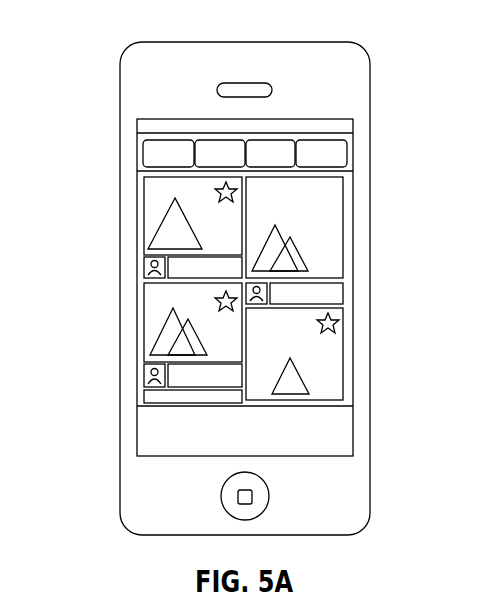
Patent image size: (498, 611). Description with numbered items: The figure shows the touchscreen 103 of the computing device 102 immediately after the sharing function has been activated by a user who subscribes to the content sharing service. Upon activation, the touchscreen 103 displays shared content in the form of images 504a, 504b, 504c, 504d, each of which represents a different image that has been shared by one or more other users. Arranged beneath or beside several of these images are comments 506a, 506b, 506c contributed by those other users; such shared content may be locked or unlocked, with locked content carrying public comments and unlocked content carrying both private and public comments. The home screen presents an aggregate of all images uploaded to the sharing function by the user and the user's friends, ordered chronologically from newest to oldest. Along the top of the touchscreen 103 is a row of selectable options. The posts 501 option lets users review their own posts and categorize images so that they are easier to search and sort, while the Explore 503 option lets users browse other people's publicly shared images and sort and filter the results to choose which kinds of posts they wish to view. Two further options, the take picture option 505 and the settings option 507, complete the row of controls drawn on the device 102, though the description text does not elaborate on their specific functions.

The computing device 102 is at (347, 42).
The touchscreen 103 is at (342, 430).
The posts 501 is at (143, 152).
The Explore 503 is at (215, 140).
The Take Pic tab 505 is at (273, 140).
The Settings tab 507 is at (347, 152).
The image 504a is at (150, 207).
The image 504b is at (333, 212).
The image 504c is at (152, 322).
The image 504d is at (333, 362).
The comments 506a is at (152, 266).
The comments 506b is at (333, 295).
The comments 506c is at (152, 375).